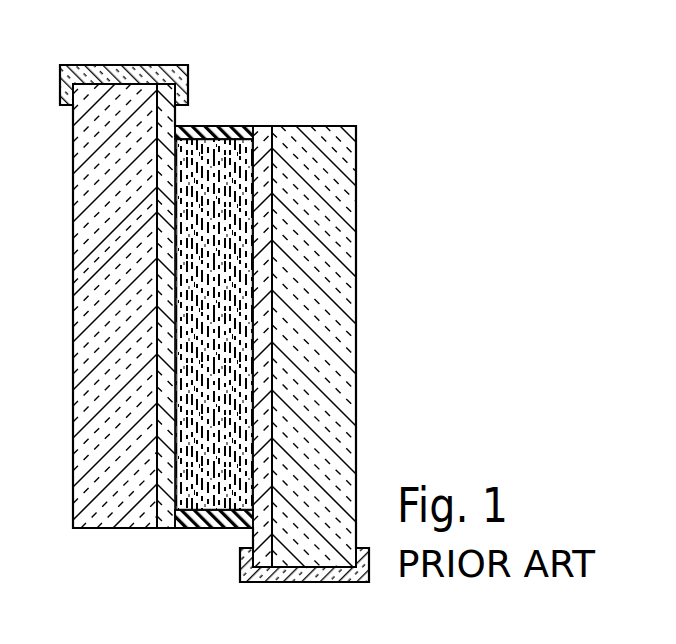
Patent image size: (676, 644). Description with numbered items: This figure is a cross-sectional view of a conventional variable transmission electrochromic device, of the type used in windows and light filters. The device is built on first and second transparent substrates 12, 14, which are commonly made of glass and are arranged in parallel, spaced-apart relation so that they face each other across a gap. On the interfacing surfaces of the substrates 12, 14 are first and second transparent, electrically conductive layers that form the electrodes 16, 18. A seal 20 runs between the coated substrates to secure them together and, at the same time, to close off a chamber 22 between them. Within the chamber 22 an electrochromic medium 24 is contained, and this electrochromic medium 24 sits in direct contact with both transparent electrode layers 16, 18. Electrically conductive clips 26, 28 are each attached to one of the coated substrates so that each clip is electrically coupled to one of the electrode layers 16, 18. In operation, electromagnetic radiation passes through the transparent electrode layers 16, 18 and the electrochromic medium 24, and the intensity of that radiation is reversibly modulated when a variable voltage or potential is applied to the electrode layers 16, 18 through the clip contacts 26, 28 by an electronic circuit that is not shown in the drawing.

The first transparent substrate 12 is at (348, 428).
The second transparent substrate 14 is at (84, 495).
The first transparent electrically conductive electrode layer 16 is at (258, 126).
The second transparent electrically conductive electrode layer 18 is at (168, 522).
The seal 20 is at (213, 137).
The chamber 22 is at (227, 176).
The electrochromic medium 24 is at (237, 497).
The electrically conductive clip 26 is at (351, 577).
The electrically conductive clip 28 is at (117, 75).